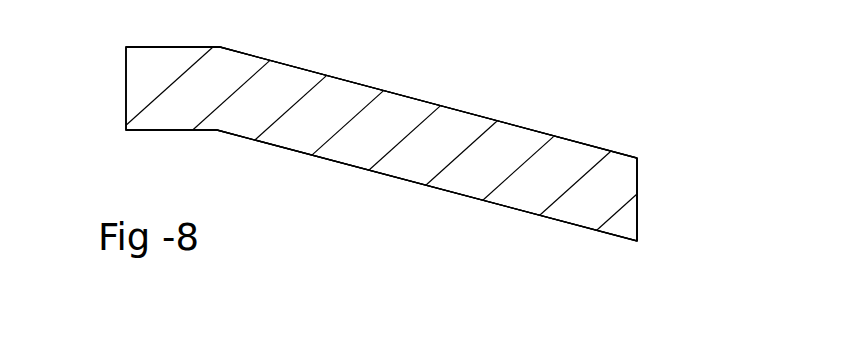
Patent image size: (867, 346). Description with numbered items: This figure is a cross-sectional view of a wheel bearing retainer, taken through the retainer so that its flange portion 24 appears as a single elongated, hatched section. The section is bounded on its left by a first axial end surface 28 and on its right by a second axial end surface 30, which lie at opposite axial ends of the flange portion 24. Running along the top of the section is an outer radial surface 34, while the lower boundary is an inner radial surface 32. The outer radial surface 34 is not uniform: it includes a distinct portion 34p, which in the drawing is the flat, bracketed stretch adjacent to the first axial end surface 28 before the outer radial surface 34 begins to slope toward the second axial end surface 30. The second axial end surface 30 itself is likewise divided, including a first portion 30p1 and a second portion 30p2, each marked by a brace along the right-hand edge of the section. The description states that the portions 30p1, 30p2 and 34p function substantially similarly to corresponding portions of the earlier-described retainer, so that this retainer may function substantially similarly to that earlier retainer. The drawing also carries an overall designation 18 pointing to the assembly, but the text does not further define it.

The brake pad assembly 18 is at (573, 48).
The flange portion 24 is at (388, 225).
The first axial end surface 28 is at (123, 72).
The second axial end surface 30 is at (647, 232).
The first portion of the second axial end surface 30p1 is at (642, 158).
The second portion of the second axial end surface 30p2 is at (643, 205).
The inner radial surface 32 is at (349, 165).
The outer radial surface 34 is at (344, 72).
The portion of the outer radial surface 34p is at (222, 41).